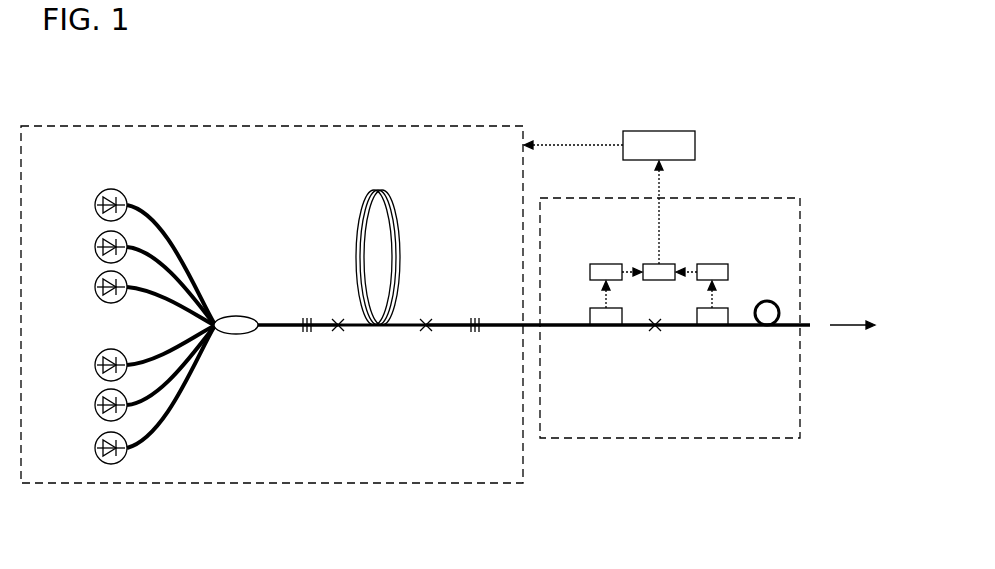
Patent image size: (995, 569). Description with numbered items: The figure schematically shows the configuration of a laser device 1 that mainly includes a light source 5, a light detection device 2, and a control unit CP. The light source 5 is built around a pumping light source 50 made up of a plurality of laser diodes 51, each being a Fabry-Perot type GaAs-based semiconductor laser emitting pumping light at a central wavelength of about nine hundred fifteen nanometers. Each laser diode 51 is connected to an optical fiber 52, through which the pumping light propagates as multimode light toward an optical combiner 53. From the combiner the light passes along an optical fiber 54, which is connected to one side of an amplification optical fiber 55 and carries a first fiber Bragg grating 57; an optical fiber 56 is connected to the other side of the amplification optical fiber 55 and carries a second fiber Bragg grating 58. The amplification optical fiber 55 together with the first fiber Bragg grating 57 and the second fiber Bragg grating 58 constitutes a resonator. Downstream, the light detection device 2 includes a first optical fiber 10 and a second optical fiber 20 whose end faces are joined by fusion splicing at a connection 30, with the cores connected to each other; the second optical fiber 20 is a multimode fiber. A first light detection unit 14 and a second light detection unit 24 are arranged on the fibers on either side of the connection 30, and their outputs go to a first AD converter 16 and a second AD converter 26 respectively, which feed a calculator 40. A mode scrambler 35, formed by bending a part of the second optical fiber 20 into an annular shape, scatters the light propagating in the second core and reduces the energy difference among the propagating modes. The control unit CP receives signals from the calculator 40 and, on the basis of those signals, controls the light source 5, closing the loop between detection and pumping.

The laser device 1 is at (811, 130).
The light detection device 2 is at (752, 196).
The light source 5 is at (80, 122).
The first optical fiber 10 is at (540, 327).
The first light detection unit 14 is at (603, 312).
The first AD converter 16 is at (604, 262).
The second optical fiber 20 is at (732, 327).
The second light detection unit 24 is at (712, 312).
The second AD converter 26 is at (712, 262).
The connection 30 is at (655, 332).
The mode scrambler 35 is at (770, 300).
The calculator 40 is at (668, 262).
The pumping light source 50 is at (77, 305).
The laser diode 51 is at (95, 205).
The optical fiber 52 is at (142, 217).
The optical combiner 53 is at (240, 332).
The optical fiber 54 is at (272, 323).
The amplification optical fiber 55 is at (400, 322).
The optical fiber 56 is at (490, 322).
The first fiber bragg grating 57 is at (313, 332).
The second fiber bragg grating 58 is at (478, 332).
The control unit CP is at (660, 148).